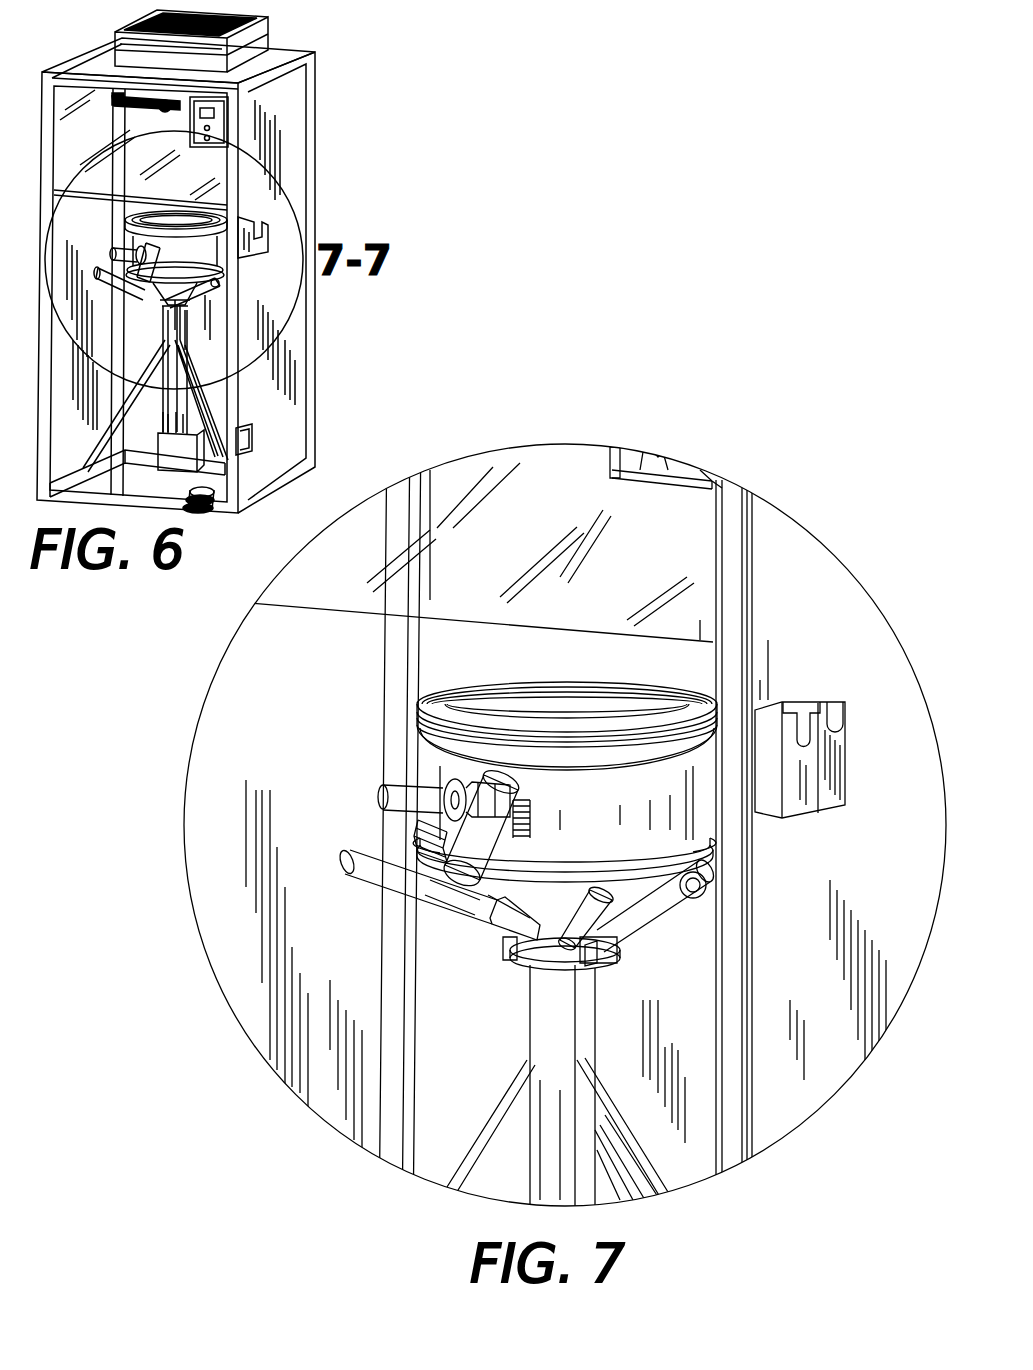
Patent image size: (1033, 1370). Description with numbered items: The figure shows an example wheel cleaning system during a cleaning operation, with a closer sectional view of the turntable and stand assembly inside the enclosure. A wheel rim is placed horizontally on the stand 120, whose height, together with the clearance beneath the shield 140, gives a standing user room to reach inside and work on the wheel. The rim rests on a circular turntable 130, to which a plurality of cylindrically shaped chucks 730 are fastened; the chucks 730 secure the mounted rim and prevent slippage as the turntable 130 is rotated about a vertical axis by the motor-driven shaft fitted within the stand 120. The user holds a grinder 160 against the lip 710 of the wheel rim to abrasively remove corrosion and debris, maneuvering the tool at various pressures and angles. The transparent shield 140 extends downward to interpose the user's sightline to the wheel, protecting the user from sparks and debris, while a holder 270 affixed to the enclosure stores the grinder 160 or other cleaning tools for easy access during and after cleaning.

The stand 120 is at (550, 1007).
The turntable 130 is at (500, 948).
The shield 140 is at (697, 548).
The grinder 160 is at (393, 795).
The holder 270 is at (763, 805).
The lip 710 is at (450, 753).
The chucks 730 is at (635, 912).